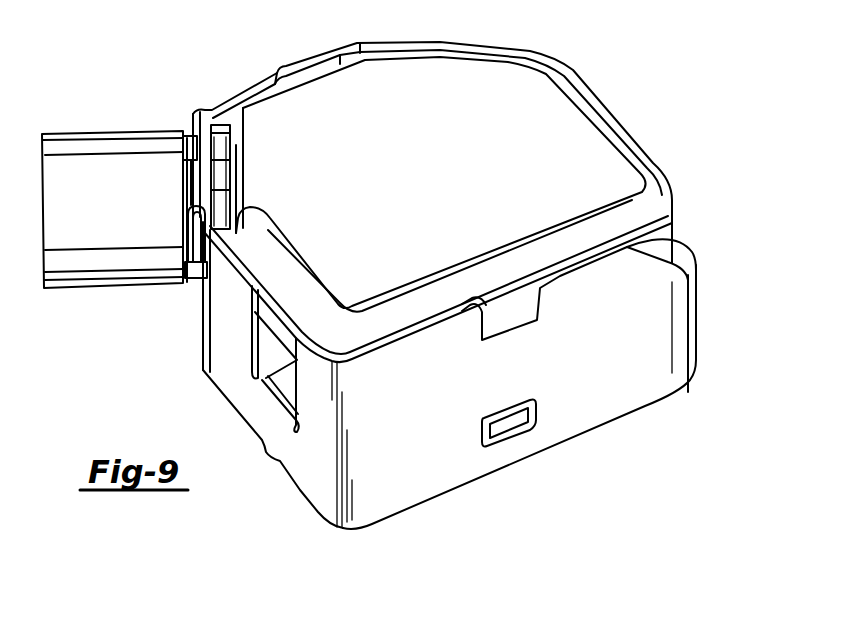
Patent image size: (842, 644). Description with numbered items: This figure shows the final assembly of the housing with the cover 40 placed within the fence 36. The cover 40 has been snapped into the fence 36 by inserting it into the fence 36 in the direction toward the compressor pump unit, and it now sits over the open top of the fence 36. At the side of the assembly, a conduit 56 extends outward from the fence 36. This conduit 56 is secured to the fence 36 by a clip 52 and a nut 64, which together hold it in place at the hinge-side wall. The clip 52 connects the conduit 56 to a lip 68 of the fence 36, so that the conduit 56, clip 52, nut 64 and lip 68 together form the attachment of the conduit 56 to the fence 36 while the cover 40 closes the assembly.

The fence 36 is at (456, 406).
The cover 40 is at (446, 170).
The clip 52 is at (180, 138).
The conduit 56 is at (133, 165).
The nut 64 is at (225, 156).
The lip 68 is at (198, 238).